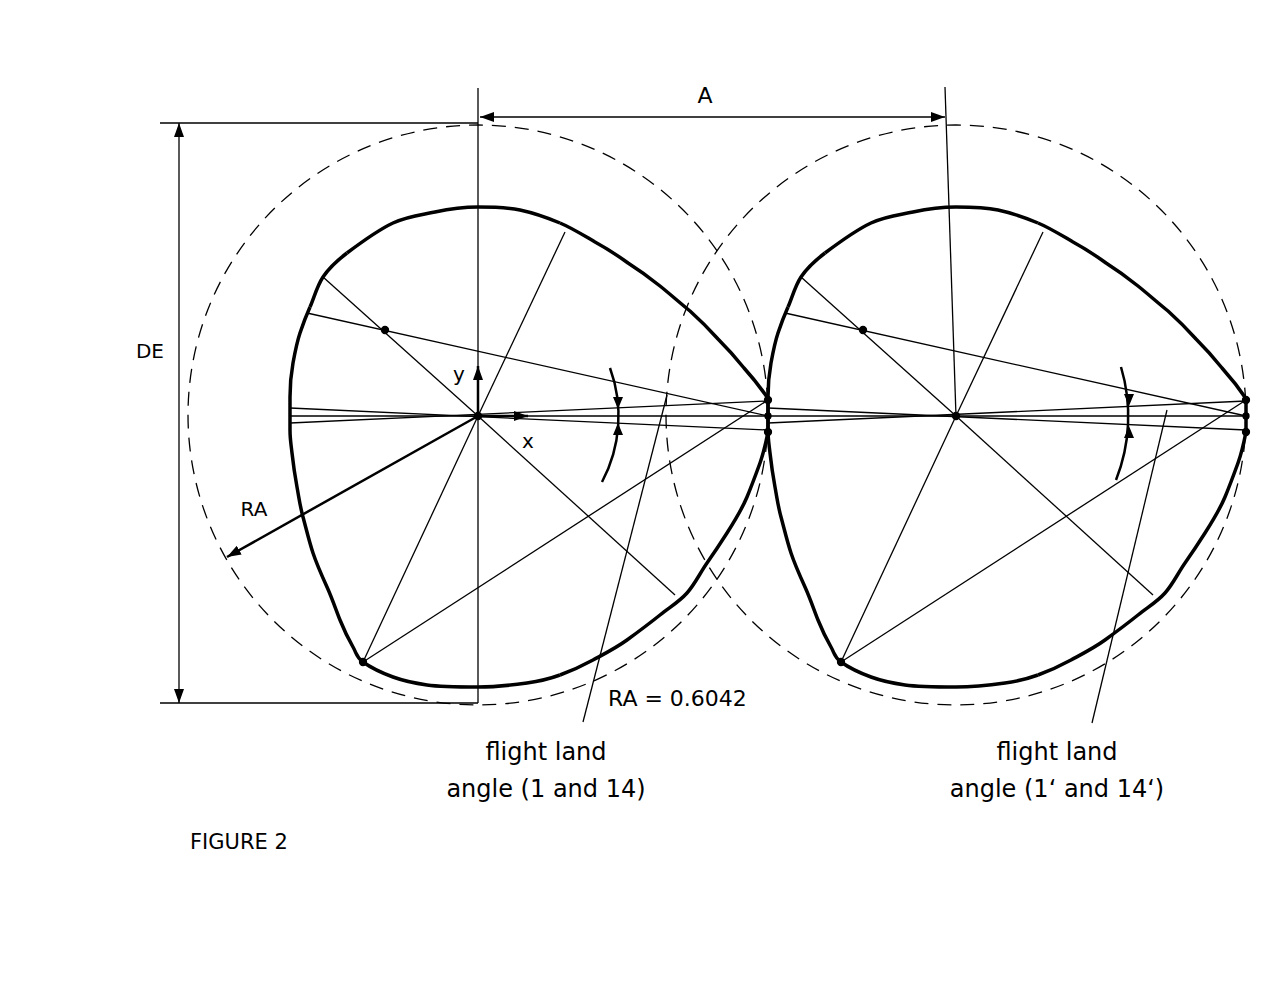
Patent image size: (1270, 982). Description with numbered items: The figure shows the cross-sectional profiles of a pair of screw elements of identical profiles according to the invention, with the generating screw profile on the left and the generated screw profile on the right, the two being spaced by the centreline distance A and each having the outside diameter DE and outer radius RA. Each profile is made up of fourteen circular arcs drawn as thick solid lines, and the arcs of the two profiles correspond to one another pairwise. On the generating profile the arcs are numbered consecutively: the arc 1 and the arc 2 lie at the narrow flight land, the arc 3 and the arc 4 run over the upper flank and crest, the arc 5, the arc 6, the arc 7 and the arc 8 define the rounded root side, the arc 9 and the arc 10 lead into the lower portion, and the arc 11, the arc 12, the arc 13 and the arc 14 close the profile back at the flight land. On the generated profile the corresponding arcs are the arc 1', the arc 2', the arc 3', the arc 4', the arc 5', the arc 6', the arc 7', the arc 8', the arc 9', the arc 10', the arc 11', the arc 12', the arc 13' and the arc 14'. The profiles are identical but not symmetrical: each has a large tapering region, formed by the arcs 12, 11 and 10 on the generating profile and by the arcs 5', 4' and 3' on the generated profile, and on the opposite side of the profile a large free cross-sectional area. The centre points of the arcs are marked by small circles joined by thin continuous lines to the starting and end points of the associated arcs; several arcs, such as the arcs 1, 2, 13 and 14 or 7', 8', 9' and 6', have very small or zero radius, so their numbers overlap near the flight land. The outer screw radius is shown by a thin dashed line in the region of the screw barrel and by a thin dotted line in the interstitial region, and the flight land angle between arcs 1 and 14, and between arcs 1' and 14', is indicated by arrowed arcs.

The arc 1 is at (761, 408).
The arc 2 is at (754, 409).
The arc 3 is at (664, 311).
The arc 4 is at (453, 230).
The arc 5 is at (394, 334).
The arc 6 is at (529, 361).
The arc 7 is at (302, 406).
The arc 8 is at (302, 424).
The arc 9 is at (326, 546).
The arc 10 is at (378, 649).
The arc 11 is at (461, 668).
The arc 12 is at (664, 553).
The arc 13 is at (750, 429).
The arc 14 is at (759, 433).
The arc 1' is at (790, 418).
The arc 2' is at (804, 546).
The arc 3' is at (855, 648).
The arc 4' is at (939, 668).
The arc 5' is at (1142, 553).
The arc 6' is at (1235, 433).
The arc 7' is at (1233, 424).
The arc 8' is at (1233, 410).
The arc 9' is at (1235, 405).
The arc 10' is at (1142, 311).
The arc 11' is at (931, 230).
The arc 12' is at (872, 334).
The arc 13' is at (1007, 361).
The arc 14' is at (785, 410).